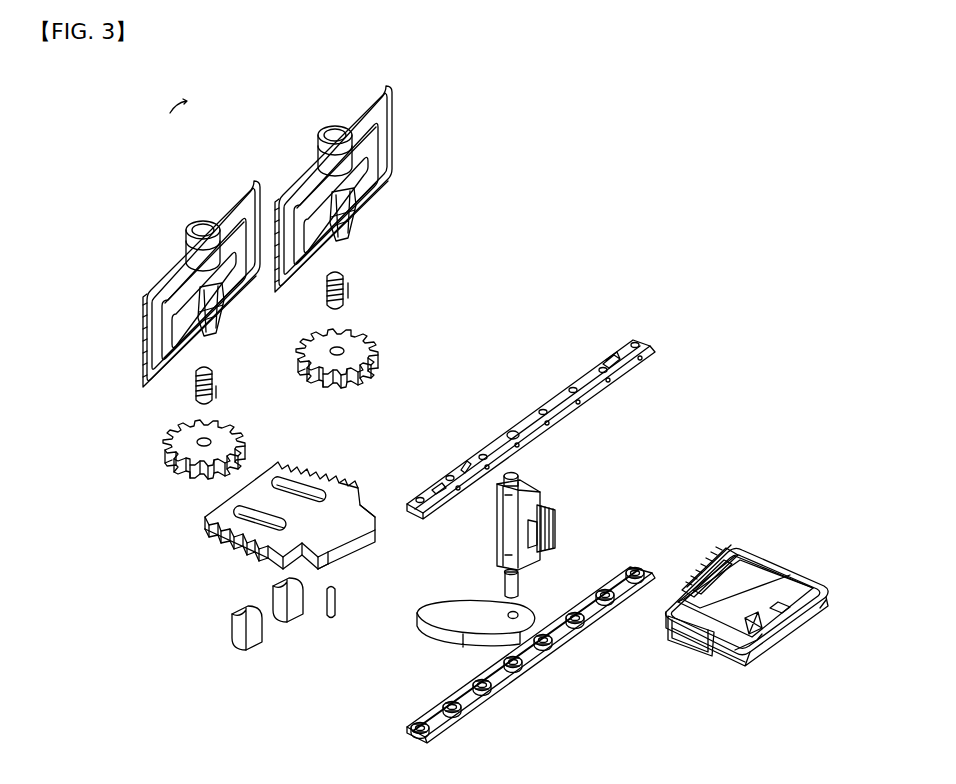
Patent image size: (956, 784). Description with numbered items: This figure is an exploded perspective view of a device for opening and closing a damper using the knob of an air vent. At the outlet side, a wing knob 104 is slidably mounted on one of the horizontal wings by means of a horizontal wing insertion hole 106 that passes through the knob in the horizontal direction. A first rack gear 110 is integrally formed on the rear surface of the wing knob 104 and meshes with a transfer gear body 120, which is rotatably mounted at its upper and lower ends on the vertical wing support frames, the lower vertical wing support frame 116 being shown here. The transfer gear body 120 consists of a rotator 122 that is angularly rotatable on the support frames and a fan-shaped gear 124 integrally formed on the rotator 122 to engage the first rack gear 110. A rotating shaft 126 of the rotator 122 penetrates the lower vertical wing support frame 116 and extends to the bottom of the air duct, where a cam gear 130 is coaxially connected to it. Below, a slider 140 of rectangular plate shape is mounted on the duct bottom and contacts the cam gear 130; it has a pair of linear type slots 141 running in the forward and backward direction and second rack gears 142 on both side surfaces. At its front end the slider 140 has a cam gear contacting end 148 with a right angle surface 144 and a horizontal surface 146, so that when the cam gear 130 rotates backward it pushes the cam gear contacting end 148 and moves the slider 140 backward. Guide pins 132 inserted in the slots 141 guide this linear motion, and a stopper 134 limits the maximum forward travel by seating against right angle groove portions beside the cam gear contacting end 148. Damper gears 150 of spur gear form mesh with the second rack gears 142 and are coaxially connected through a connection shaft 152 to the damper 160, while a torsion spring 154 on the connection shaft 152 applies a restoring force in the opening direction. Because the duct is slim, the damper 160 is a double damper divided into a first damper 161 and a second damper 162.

The wing knob 104 is at (780, 580).
The horizontal wing insertion hole 106 is at (688, 638).
The first rack gear 110 is at (708, 577).
The lower vertical wing support frame 116 is at (537, 652).
The transfer gear body 120 is at (497, 538).
The rotator 122 is at (520, 507).
The fan-shaped gear 124 is at (557, 537).
The rotating shaft 126 is at (522, 587).
The cam gear 130 is at (440, 618).
The guide pins 132 is at (294, 614).
The stopper 134 is at (335, 603).
The slider 140 is at (340, 481).
The linear type slots 141 is at (258, 516).
The second rack gears 142 is at (227, 543).
The right angle surface 144 is at (330, 558).
The horizontal surface 146 is at (368, 530).
The cam gear contacting end 148 is at (355, 519).
The damper gear 150 is at (220, 423).
The connection shaft 152 is at (344, 278).
The torsion spring 154 is at (349, 291).
The damper 160 is at (165, 99).
The first damper 161 is at (237, 208).
The second damper 162 is at (302, 168).